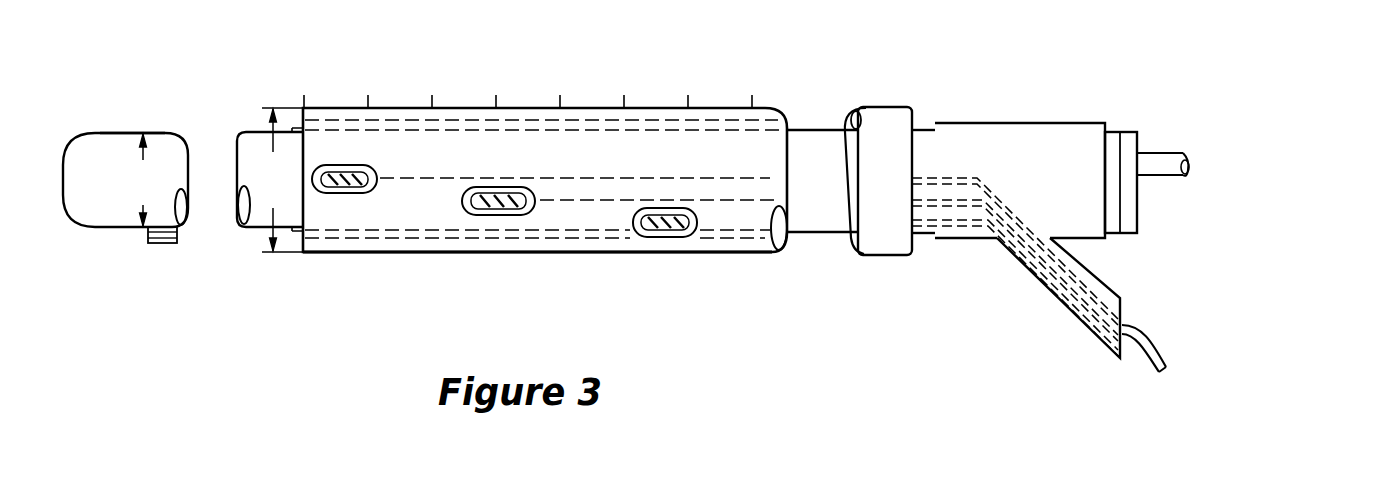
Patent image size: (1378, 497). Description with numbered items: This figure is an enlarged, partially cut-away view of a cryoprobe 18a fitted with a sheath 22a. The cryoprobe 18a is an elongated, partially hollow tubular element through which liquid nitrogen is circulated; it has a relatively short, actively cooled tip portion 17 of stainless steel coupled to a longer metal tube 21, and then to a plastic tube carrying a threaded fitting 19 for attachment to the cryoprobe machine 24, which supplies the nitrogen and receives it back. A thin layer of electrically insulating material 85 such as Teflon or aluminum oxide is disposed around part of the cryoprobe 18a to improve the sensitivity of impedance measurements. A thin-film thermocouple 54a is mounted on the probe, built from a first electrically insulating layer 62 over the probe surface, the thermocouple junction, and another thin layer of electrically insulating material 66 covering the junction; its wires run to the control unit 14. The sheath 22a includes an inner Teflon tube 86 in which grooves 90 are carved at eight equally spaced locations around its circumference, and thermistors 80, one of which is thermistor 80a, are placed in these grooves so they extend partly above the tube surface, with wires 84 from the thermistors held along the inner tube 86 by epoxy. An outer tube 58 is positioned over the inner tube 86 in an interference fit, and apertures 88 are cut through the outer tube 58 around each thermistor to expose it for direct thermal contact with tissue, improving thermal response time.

The tip portion 17 is at (106, 118).
The cryoprobe 18a is at (162, 124).
The thermocouple 54a is at (150, 238).
The first electrically insulating layer 62 is at (180, 231).
The electrically insulating material 66 is at (178, 243).
The metal tube 21 is at (818, 238).
The layer of electrically insulating material 85 is at (300, 236).
The sheath 22a is at (402, 116).
The wires 84 is at (728, 176).
The thermistors 80 is at (504, 230).
The thermistor 80a is at (344, 164).
The apertures 88 is at (330, 173).
The grooves 90 is at (468, 201).
The outer tube 58 is at (859, 102).
The inner Teflon tube 86 is at (845, 118).
The threaded fitting 19 is at (1129, 122).
The cryoprobe machine 24 is at (1255, 163).
The control unit 14 is at (1163, 389).